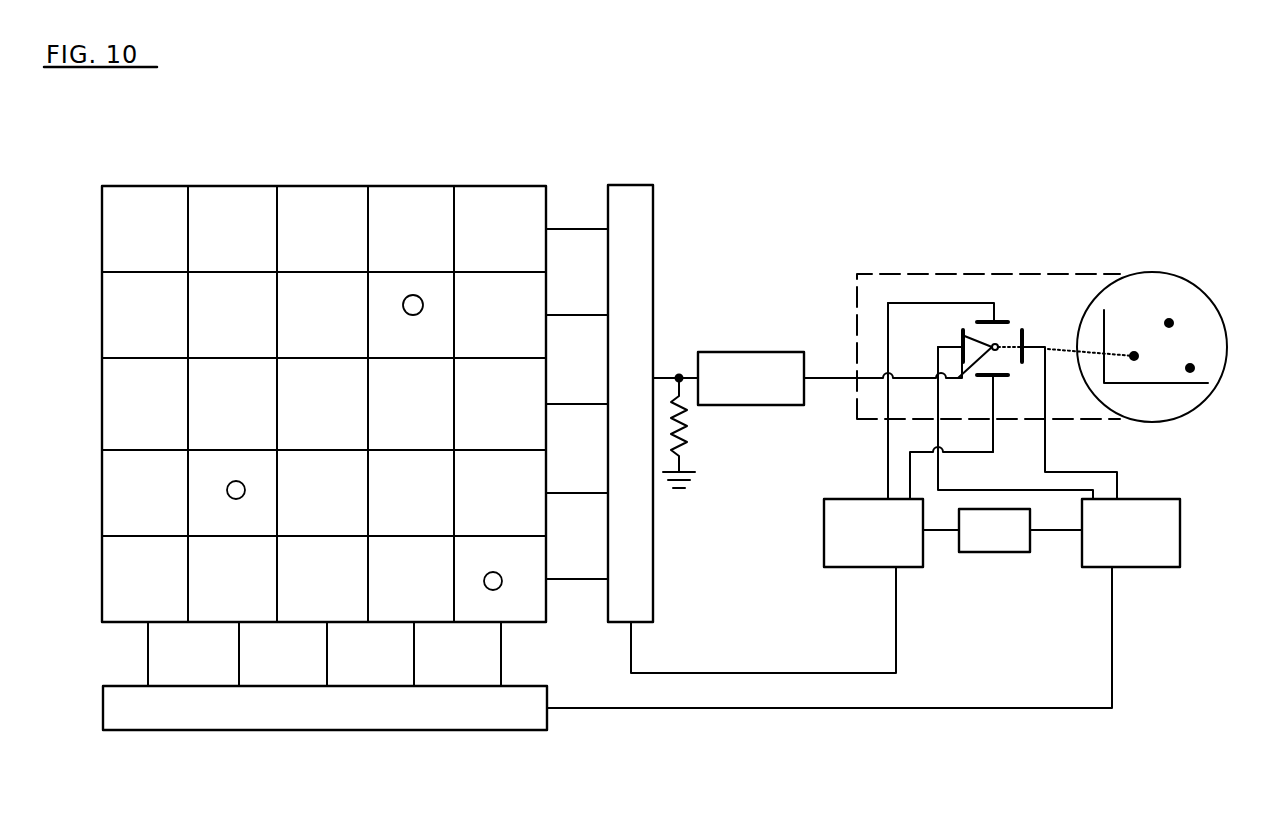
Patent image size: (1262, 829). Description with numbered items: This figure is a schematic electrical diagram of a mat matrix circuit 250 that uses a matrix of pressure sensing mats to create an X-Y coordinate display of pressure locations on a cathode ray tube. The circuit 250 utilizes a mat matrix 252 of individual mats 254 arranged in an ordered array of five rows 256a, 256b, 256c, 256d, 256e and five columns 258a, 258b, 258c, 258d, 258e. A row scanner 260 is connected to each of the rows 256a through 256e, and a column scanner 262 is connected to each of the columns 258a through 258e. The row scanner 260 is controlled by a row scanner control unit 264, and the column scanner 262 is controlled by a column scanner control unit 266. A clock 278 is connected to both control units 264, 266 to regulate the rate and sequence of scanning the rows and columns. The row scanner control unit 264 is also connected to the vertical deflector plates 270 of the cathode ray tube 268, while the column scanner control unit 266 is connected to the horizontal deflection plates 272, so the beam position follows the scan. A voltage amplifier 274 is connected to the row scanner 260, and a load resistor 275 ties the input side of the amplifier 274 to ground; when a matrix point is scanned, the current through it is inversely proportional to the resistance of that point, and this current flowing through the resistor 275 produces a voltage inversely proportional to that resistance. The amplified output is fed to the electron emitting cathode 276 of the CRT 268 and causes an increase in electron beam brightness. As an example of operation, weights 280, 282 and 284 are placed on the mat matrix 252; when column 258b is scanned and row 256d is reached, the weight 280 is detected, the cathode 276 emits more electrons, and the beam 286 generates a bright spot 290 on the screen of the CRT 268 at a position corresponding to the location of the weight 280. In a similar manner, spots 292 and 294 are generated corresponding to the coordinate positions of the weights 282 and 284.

The mat matrix circuit 250 is at (304, 372).
The mat matrix 252 is at (101, 210).
The mat 254 is at (122, 192).
The row 256a is at (101, 233).
The row 256b is at (101, 313).
The row 256c is at (101, 403).
The row 256d is at (101, 493).
The row 256e is at (101, 578).
The column 258a is at (147, 182).
The column 258b is at (239, 182).
The column 258c is at (329, 182).
The column 258d is at (417, 182).
The column 258e is at (505, 182).
The row scanner 260 is at (657, 280).
The column scanner 262 is at (287, 733).
The row scanner control unit 264 is at (869, 568).
The column scanner control unit 266 is at (1130, 568).
The cathode ray tube 268 is at (1203, 292).
The vertical deflector plates 270 is at (993, 315).
The horizontal deflection plates 272 is at (957, 344).
The voltage amplifier 274 is at (768, 406).
The load resistor 275 is at (692, 432).
The electron emitting cathode 276 is at (972, 326).
The clock 278 is at (1003, 553).
The weight 280 is at (229, 497).
The weight 282 is at (422, 316).
The weight 284 is at (509, 553).
The beam 286 is at (1093, 352).
The bright spot 290 is at (1130, 359).
The spot 292 is at (1170, 318).
The spot 294 is at (1197, 350).